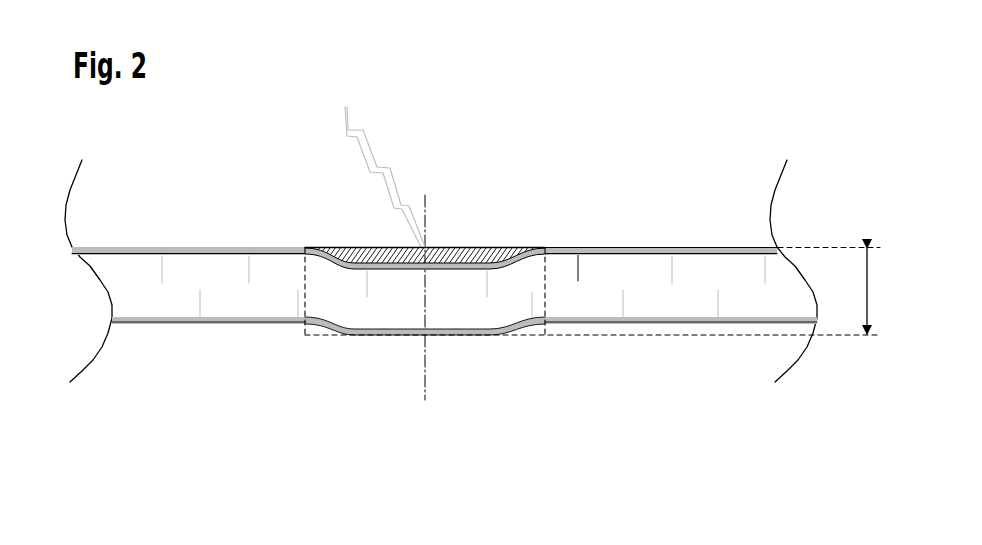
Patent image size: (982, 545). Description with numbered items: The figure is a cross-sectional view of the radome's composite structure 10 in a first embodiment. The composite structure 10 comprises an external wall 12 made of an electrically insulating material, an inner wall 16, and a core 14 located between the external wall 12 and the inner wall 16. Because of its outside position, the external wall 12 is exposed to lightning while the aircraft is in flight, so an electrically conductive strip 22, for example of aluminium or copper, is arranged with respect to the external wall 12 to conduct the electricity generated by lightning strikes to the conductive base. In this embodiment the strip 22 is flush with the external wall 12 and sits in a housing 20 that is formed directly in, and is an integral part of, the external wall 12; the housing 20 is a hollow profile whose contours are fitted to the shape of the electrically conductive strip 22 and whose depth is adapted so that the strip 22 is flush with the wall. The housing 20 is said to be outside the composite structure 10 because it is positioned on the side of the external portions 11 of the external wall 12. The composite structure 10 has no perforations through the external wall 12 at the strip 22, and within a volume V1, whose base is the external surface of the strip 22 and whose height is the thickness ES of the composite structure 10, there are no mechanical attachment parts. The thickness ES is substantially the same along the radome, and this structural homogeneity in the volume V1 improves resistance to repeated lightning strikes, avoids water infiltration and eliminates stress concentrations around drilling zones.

The composite structure 10 is at (151, 186).
The external portions 11 is at (593, 247).
The external wall 12 is at (580, 176).
The core 14 is at (463, 287).
The inner wall 16 is at (131, 328).
The housing 20 is at (505, 257).
The electrically conductive strip 22 is at (355, 247).
The volume V1 is at (323, 338).
The thickness ES is at (601, 292).